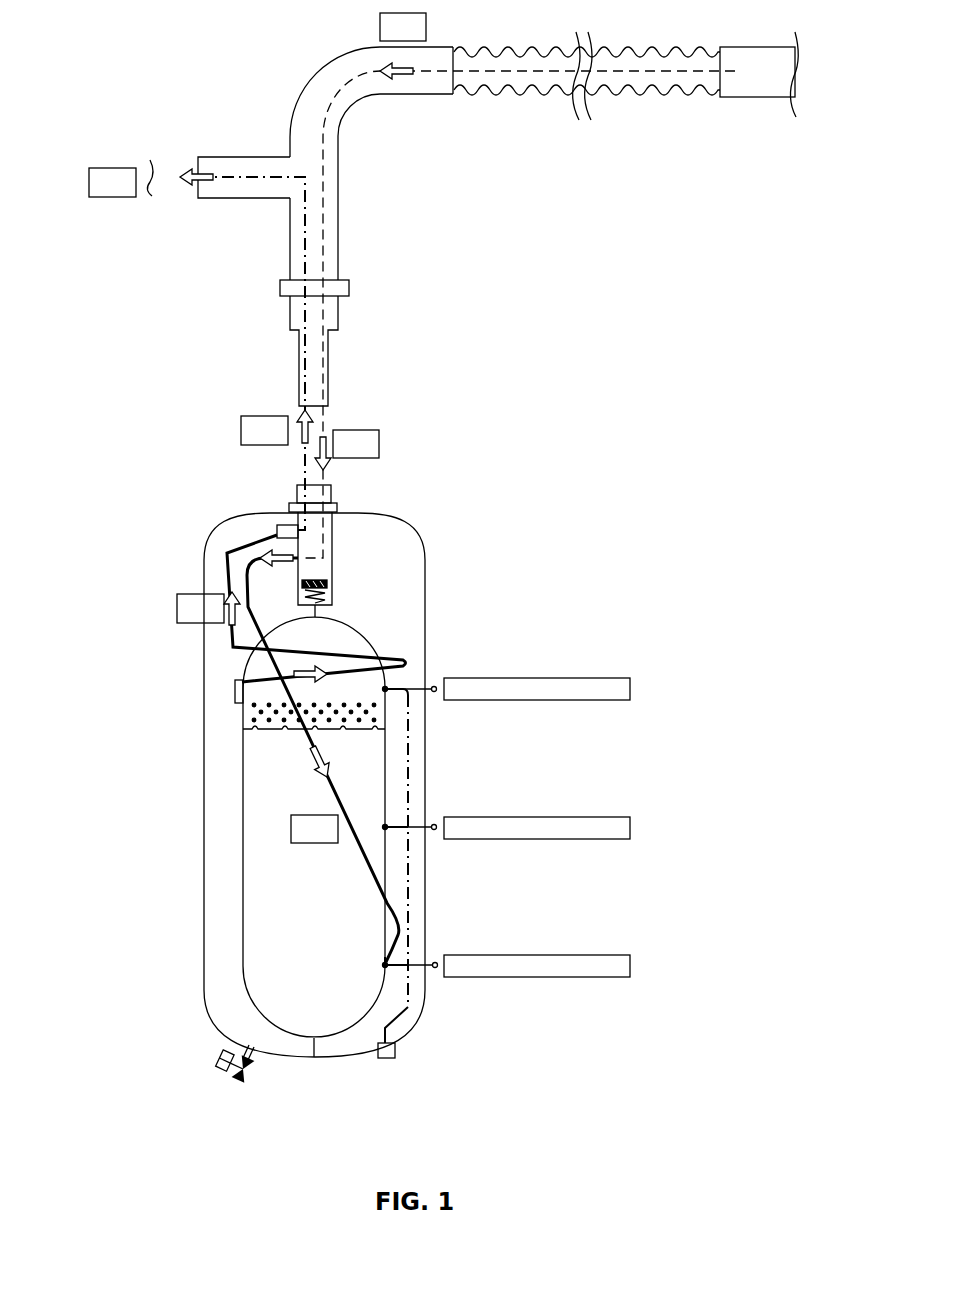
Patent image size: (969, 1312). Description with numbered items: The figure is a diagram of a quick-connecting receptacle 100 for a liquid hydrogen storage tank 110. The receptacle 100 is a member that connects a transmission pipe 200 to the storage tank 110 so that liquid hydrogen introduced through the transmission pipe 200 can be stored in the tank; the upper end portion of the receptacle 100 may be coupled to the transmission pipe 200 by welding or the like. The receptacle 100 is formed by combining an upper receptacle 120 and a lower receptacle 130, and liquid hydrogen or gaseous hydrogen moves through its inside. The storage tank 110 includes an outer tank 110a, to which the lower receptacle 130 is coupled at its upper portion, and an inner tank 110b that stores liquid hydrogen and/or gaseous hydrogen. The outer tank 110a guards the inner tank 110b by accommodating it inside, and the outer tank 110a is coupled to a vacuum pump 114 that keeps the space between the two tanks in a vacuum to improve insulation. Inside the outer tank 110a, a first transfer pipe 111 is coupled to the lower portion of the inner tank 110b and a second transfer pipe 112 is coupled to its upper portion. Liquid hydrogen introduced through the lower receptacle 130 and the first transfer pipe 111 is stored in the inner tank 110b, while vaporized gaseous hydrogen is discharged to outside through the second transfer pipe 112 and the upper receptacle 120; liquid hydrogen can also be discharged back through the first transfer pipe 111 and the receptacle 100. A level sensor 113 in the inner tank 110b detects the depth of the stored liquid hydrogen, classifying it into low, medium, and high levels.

The transmission pipe 200 is at (318, 95).
The quick-connecting receptacle 100 is at (470, 357).
The upper receptacle 120 is at (352, 369).
The lower receptacle 130 is at (356, 489).
The storage tank 110 is at (327, 785).
The outer tank 110a is at (204, 800).
The inner tank 110b is at (242, 880).
The first transfer pipe 111 is at (300, 742).
The second transfer pipe 112 is at (258, 668).
The level sensor 113 is at (396, 1050).
The vacuum pump 114 is at (240, 1088).